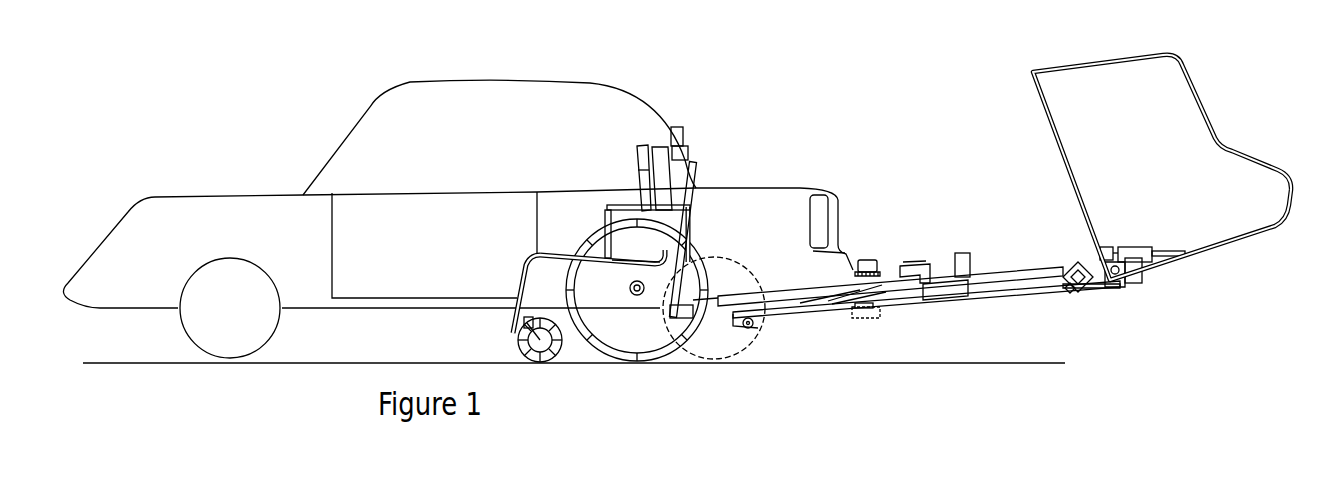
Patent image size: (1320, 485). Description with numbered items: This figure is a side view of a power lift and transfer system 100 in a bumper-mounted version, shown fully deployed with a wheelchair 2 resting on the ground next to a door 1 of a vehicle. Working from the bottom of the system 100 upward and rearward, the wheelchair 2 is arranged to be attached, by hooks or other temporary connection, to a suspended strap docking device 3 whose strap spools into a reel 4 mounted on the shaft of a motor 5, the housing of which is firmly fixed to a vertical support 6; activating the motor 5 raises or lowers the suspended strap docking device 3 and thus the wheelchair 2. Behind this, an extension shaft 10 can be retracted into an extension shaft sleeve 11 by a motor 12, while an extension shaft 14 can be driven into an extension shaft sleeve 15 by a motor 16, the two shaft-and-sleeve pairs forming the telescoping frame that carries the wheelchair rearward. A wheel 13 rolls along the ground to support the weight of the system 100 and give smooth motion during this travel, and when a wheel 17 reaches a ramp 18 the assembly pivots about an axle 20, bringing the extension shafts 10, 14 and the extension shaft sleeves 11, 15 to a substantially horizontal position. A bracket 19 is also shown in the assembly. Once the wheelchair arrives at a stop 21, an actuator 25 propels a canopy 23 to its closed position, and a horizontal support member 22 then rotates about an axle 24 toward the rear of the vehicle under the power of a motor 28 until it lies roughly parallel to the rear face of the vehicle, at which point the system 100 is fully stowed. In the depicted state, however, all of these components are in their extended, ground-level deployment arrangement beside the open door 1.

The power lift and transfer system 100 is at (114, 122).
The door 1 is at (443, 220).
The wheelchair 2 is at (680, 198).
The suspended strap docking device 3 is at (607, 207).
The reel 4 is at (645, 153).
The motor 5 is at (682, 137).
The vertical support 6 is at (663, 178).
The extension shaft 10 is at (718, 300).
The extension shaft sleeve 11 is at (783, 295).
The motor 12 is at (965, 253).
The wheel 13 is at (685, 352).
The extension shaft 14 is at (817, 307).
The extension shaft sleeve 15 is at (968, 283).
The motor 16 is at (1142, 275).
The wheel 17 is at (750, 328).
The ramp 18 is at (882, 297).
The bracket 19 is at (930, 267).
The axle 20 is at (1123, 280).
The stop 21 is at (1078, 270).
The horizontal support member 22 is at (1098, 288).
The canopy 23 is at (1200, 103).
The axle 24 is at (862, 258).
The actuator 25 is at (1135, 252).
The motor 28 is at (867, 318).